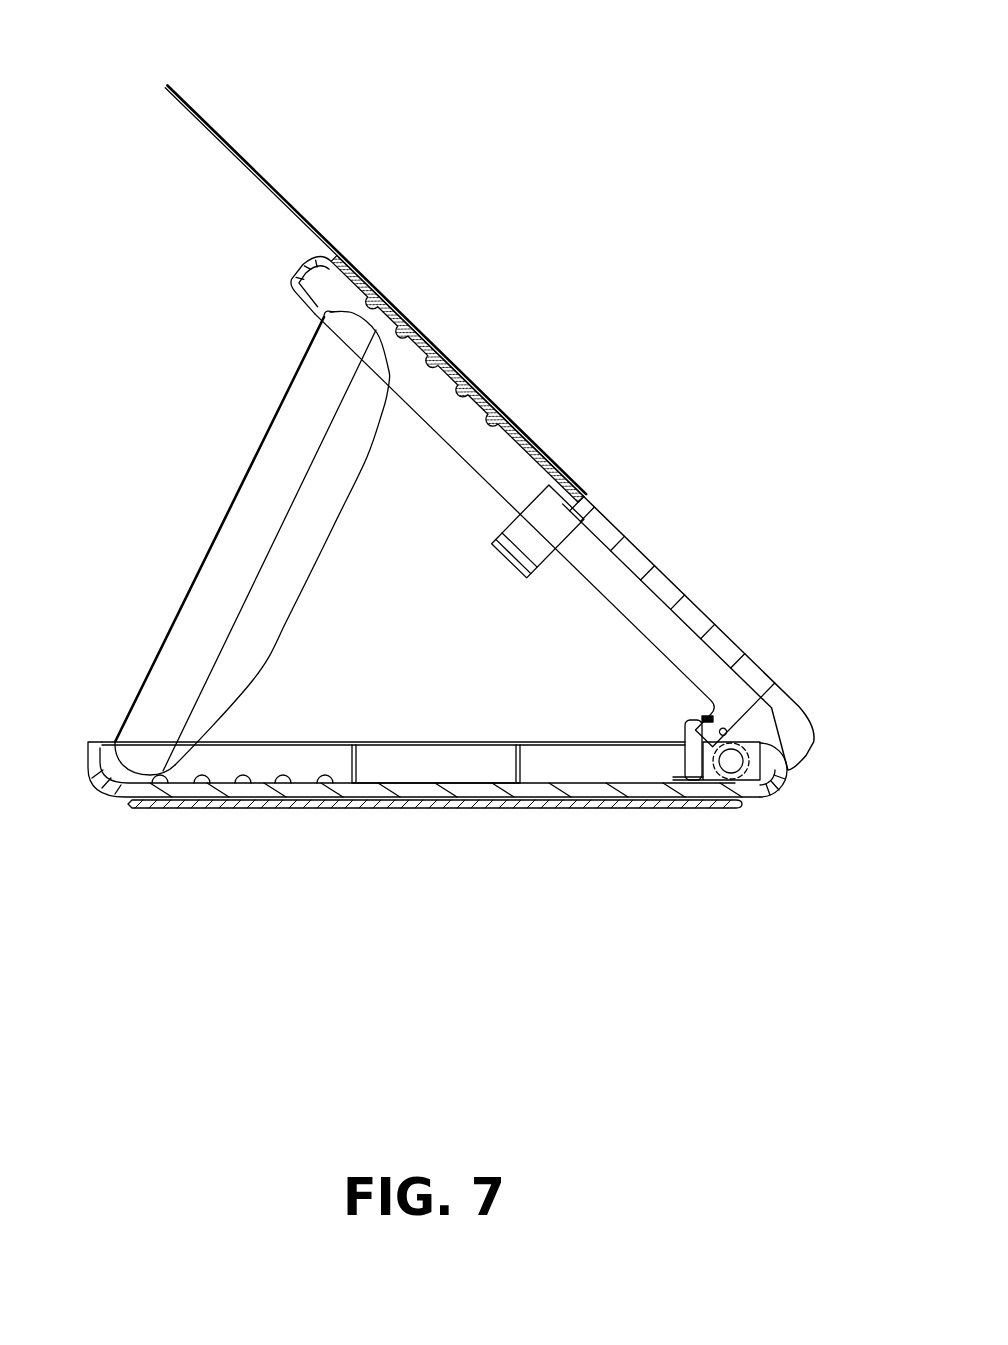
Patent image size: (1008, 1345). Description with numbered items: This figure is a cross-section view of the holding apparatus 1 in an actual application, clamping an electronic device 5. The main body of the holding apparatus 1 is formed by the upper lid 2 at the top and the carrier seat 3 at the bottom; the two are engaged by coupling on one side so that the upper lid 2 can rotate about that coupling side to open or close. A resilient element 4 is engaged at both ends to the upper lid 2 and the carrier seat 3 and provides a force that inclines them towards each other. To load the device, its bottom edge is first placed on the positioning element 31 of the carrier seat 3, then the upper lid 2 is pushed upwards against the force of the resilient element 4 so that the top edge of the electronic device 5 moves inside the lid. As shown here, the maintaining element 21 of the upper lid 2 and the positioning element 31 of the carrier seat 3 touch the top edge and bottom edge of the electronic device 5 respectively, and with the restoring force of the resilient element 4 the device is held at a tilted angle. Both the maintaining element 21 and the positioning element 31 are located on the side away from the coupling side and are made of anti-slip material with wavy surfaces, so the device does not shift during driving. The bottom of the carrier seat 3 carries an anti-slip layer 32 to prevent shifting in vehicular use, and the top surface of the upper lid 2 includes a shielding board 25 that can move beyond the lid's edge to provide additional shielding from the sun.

The holding apparatus 1 is at (676, 300).
The upper lid 2 is at (638, 560).
The maintaining element 21 is at (447, 347).
The shielding board 25 is at (277, 195).
The carrier seat 3 is at (590, 792).
The positioning element 31 is at (160, 780).
The anti-slip layer 32 is at (333, 800).
The resilient element 4 is at (747, 782).
The electronic device 5 is at (253, 527).